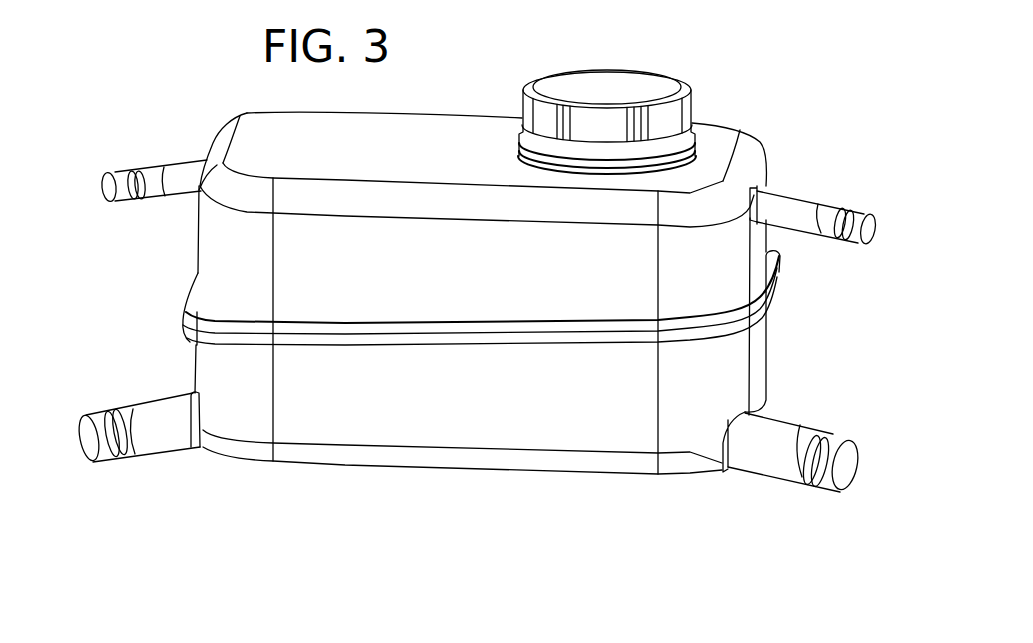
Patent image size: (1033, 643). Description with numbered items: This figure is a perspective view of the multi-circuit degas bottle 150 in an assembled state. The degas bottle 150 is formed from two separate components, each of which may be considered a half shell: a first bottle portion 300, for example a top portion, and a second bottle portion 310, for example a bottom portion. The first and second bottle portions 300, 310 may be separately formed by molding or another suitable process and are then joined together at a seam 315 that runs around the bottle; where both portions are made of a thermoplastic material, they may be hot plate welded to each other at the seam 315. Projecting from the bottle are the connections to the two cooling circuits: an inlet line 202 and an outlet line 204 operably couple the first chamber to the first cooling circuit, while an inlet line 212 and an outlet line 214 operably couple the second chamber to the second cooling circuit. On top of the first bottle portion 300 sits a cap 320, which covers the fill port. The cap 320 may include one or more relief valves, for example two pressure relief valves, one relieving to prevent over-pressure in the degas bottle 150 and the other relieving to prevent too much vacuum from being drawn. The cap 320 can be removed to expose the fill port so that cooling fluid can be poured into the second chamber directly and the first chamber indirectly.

The degas bottle 150 is at (205, 485).
The inlet line 202 is at (155, 168).
The outlet line 204 is at (140, 413).
The inlet line 212 is at (797, 212).
The outlet line 214 is at (775, 444).
The first bottle portion 300 is at (358, 135).
The second bottle portion 310 is at (467, 455).
The seam 315 is at (192, 322).
The cap 320 is at (622, 93).